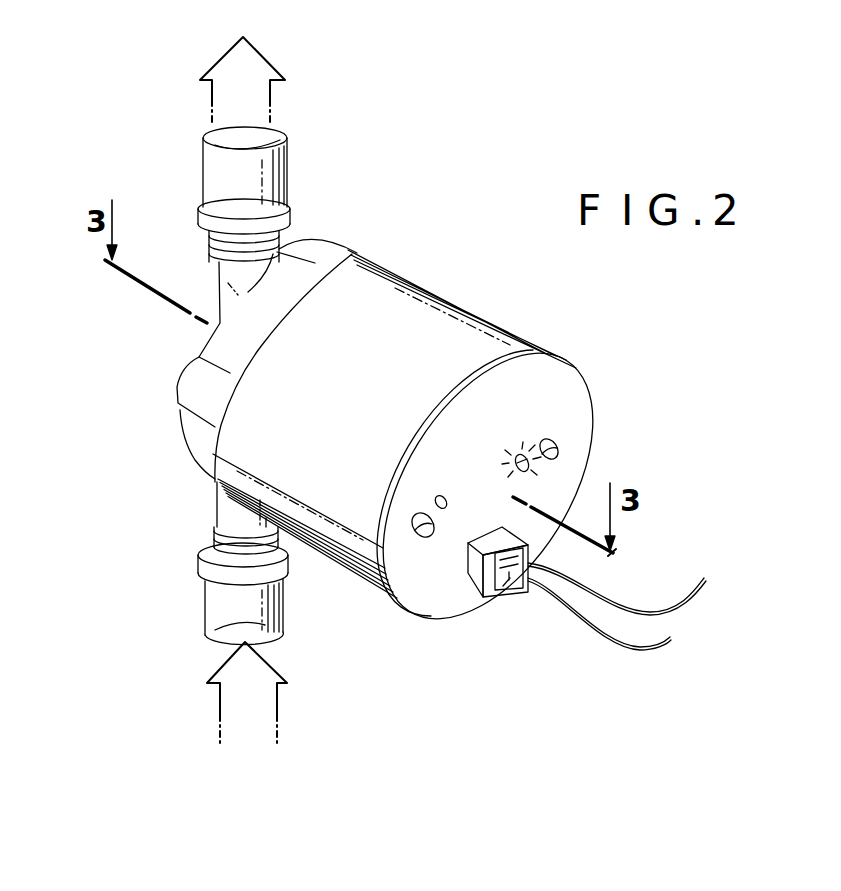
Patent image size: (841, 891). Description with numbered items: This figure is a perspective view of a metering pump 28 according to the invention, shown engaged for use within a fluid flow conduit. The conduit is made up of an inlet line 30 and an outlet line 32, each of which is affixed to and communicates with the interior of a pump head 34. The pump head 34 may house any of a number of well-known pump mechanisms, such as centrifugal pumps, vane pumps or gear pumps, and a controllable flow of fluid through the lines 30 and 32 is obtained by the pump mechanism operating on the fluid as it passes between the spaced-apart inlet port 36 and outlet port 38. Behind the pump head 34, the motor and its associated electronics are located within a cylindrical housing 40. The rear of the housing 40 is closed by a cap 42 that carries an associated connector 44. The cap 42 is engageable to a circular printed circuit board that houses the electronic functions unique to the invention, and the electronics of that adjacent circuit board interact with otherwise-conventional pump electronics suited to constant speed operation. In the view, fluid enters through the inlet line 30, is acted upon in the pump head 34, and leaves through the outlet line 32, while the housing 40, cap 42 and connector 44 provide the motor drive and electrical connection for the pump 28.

The metering pump 28 is at (395, 256).
The inlet line 30 is at (210, 596).
The outlet line 32 is at (280, 157).
The pump head 34 is at (213, 342).
The inlet port 36 is at (220, 511).
The outlet port 38 is at (222, 269).
The cylindrical housing 40 is at (463, 320).
The cap 42 is at (562, 388).
The connector 44 is at (505, 590).